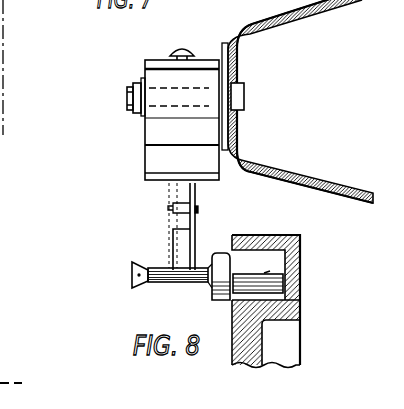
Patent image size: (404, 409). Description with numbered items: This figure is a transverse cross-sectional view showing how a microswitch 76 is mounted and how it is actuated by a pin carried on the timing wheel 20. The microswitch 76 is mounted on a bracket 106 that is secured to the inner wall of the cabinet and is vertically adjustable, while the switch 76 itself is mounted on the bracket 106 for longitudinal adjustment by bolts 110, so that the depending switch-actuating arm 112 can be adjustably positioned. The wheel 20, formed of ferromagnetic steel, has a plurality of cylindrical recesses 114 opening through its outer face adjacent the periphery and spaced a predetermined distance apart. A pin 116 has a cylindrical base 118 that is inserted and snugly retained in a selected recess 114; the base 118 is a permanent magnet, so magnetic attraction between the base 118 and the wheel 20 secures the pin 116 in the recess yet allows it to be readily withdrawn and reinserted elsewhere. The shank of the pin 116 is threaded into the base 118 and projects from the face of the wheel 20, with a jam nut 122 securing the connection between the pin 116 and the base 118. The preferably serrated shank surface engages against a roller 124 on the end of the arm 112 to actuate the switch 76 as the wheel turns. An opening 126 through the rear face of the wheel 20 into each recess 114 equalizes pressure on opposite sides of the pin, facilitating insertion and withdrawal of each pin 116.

The wheel 20 is at (302, 306).
The microswitch 76 is at (144, 143).
The bracket 106 is at (279, 28).
The bolts 110 is at (131, 88).
The switch-actuating arm 112 is at (168, 220).
The cylindrical recesses 114 is at (265, 250).
The pins 116 is at (198, 296).
The cylindrical base 118 is at (300, 279).
The jam nut 122 is at (218, 252).
The roller 124 is at (170, 248).
The opening 126 is at (270, 272).